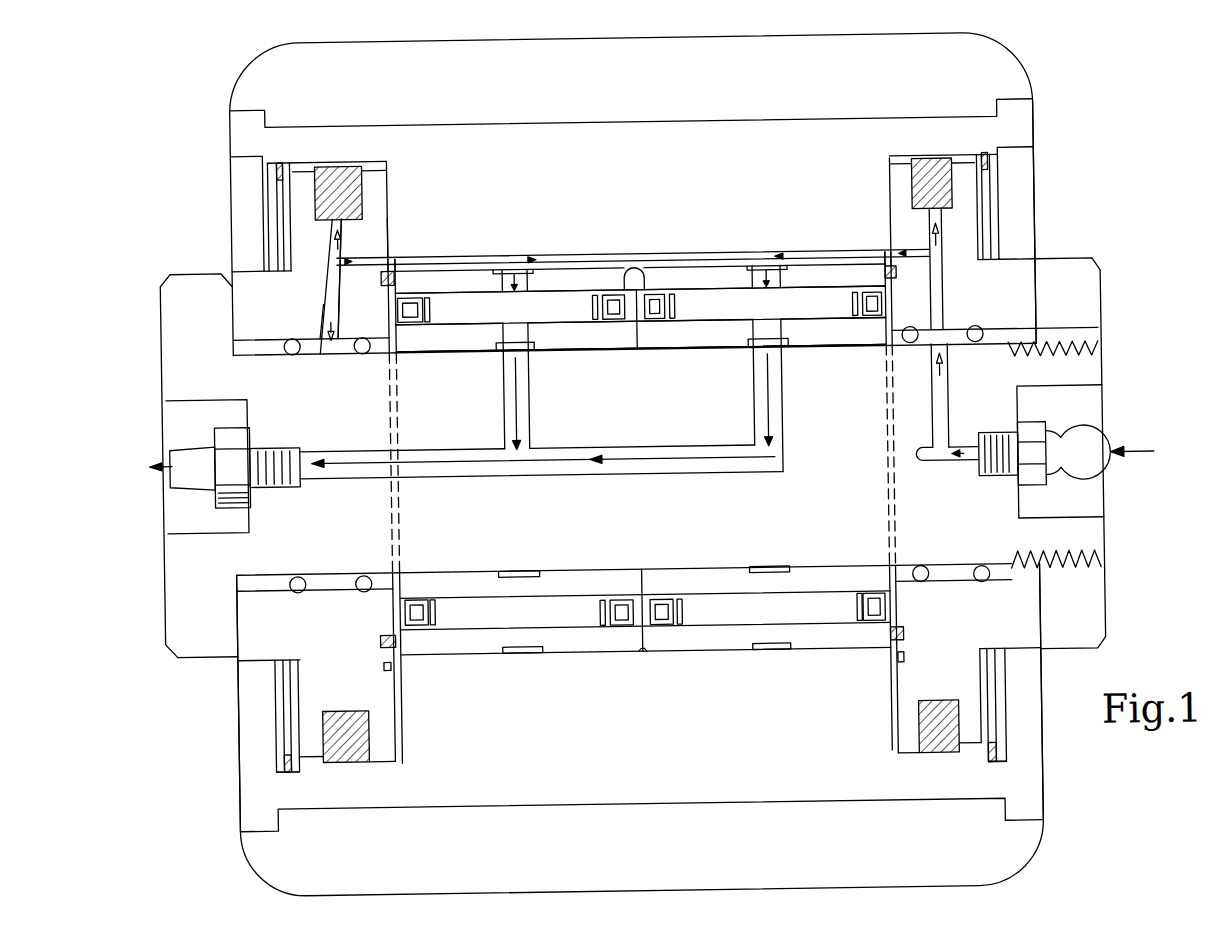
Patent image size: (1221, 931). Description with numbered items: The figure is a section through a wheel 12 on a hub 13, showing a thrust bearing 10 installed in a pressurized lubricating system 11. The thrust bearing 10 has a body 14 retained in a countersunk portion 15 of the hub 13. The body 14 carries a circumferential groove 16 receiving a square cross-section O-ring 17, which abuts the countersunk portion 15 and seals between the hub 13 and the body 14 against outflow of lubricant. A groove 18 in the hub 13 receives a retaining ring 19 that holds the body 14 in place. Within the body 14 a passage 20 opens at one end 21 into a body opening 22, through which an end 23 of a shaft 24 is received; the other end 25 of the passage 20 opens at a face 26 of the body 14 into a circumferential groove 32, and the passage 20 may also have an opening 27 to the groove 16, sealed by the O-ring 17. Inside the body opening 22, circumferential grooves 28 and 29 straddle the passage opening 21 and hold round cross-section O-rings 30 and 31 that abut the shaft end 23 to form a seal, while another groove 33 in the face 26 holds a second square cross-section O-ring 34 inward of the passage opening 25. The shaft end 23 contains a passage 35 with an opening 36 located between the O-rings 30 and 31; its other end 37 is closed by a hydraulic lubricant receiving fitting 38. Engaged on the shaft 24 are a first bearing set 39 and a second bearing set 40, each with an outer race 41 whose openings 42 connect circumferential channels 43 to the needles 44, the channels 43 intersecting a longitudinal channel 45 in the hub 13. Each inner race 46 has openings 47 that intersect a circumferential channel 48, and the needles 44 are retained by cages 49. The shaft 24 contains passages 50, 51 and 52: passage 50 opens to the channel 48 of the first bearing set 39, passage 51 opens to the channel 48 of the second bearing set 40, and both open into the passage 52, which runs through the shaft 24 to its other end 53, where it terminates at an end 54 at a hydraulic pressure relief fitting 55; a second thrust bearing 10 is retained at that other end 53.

The thrust bearing 10 is at (247, 646).
The pressurized lubricating system 11 is at (1038, 245).
The wheel 12 is at (246, 74).
The hub 13 is at (647, 749).
The body 14 is at (373, 682).
The countersunk portion 15 is at (388, 768).
The circumferential groove 16 is at (391, 171).
The square cross-section O-ring 17 is at (330, 185).
The groove 18 is at (280, 767).
The retaining ring 19 is at (282, 757).
The passage 20 is at (329, 290).
The end 21 is at (324, 346).
The body opening 22 is at (235, 343).
The end 23 is at (1093, 543).
The shaft 24 is at (697, 510).
The end 25 is at (366, 254).
The face 26 is at (399, 520).
The opening 27 is at (339, 224).
The circumferential groove 28 is at (293, 334).
The circumferential groove 29 is at (365, 334).
The round cross-section O-ring 30 is at (297, 588).
The round cross-section O-ring 31 is at (363, 588).
The circumferential groove 32 is at (387, 266).
The groove 33 is at (378, 640).
The square cross-section O-ring 34 is at (392, 276).
The passage 35 is at (950, 412).
The opening 36 is at (934, 349).
The end 37 is at (976, 466).
The hydraulic lubricant receiving fitting 38 is at (1104, 437).
The first bearing set 39 is at (711, 268).
The second bearing set 40 is at (552, 270).
The outer race 41 is at (597, 288).
The opening 42 is at (504, 277).
The circumferential channel 43 is at (524, 653).
The needle 44 is at (505, 318).
The longitudinal channel 45 is at (582, 254).
The inner race 46 is at (434, 338).
The opening 47 is at (507, 331).
The circumferential channel 48 is at (531, 571).
The cage 49 is at (414, 308).
The passage 50 is at (784, 430).
The passage 51 is at (504, 426).
The passage 52 is at (509, 474).
The end 53 is at (317, 531).
The end 54 is at (302, 466).
The hydraulic pressure relief fitting 55 is at (168, 490).